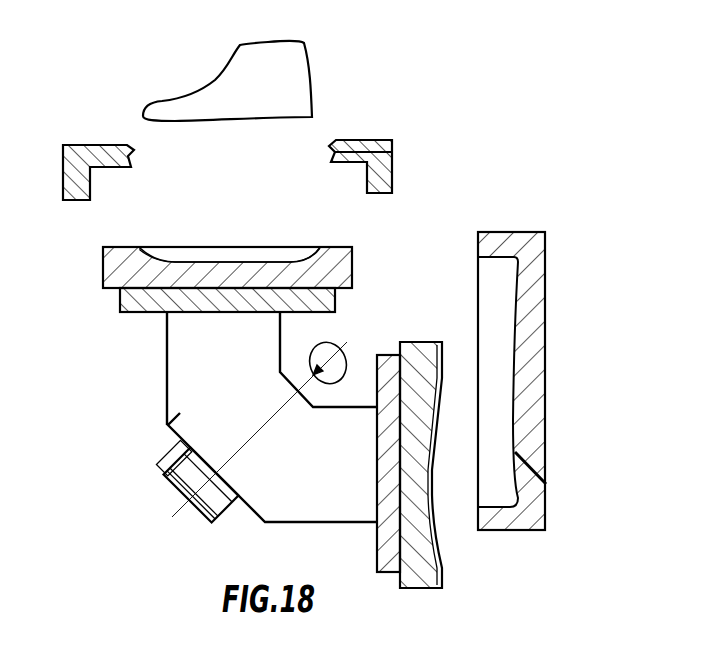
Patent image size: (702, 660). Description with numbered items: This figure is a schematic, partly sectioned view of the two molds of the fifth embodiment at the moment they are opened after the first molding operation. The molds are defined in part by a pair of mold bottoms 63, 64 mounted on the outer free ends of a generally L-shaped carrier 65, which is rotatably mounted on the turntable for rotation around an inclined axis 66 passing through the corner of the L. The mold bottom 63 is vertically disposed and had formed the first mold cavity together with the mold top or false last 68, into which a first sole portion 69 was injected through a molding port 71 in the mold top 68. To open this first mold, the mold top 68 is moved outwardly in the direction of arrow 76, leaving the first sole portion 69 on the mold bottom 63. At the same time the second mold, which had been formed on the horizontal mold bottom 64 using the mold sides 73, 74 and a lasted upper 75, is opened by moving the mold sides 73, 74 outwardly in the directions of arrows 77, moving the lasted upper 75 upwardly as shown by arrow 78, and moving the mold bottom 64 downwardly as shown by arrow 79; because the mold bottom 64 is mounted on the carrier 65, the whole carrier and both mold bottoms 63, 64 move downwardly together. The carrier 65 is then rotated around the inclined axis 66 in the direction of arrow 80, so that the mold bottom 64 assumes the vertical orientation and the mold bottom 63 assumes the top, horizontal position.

The mold bottom 63 is at (428, 582).
The mold bottom 64 is at (108, 290).
The carrier 65 is at (168, 426).
The inclined axis 66 is at (258, 432).
The mold top 68 is at (534, 343).
The first sole portion 69 is at (432, 480).
The molding port 71 is at (542, 458).
The mold side 73 is at (80, 145).
The mold side 74 is at (375, 150).
The lasted upper 75 is at (227, 81).
The arrow 76 is at (494, 373).
The arrows 77 is at (103, 184).
The arrow 78 is at (233, 138).
The arrow 79 is at (236, 220).
The arrow 80 is at (328, 342).